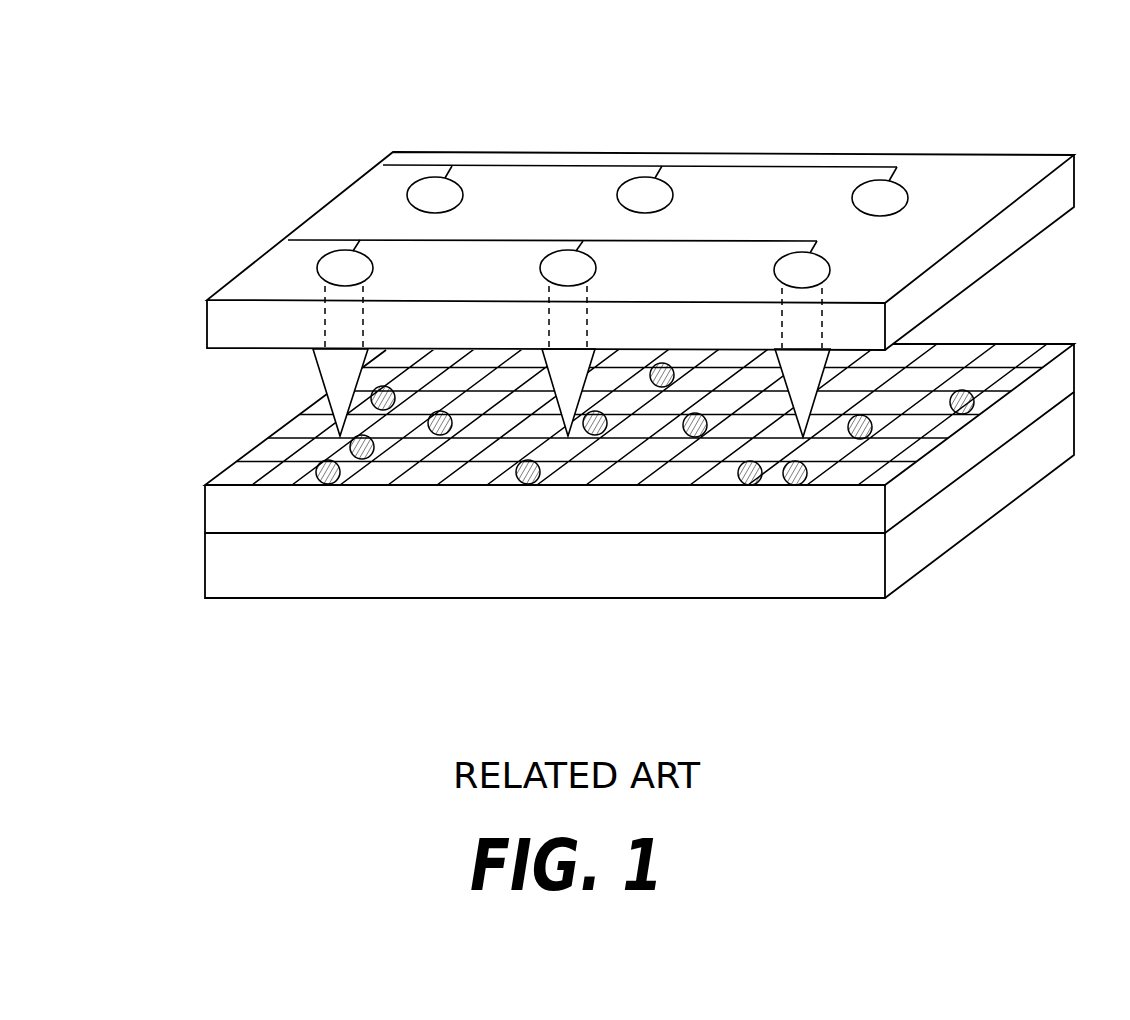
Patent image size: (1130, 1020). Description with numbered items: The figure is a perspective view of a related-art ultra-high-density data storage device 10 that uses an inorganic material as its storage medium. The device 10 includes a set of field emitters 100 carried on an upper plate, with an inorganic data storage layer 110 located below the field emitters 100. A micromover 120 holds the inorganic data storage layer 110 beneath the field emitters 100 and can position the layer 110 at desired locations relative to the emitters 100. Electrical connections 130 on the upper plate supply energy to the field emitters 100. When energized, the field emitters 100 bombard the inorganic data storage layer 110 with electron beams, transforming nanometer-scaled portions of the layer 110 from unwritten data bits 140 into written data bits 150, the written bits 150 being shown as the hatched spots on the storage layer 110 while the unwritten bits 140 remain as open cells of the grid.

The ultra-high-density data storage device 10 is at (338, 70).
The field emitters 100 is at (335, 380).
The inorganic data storage layer 110 is at (957, 457).
The micromover 120 is at (262, 577).
The electrical connections 130 is at (808, 165).
The unwritten data bits 140 is at (895, 452).
The written data bits 150 is at (686, 434).